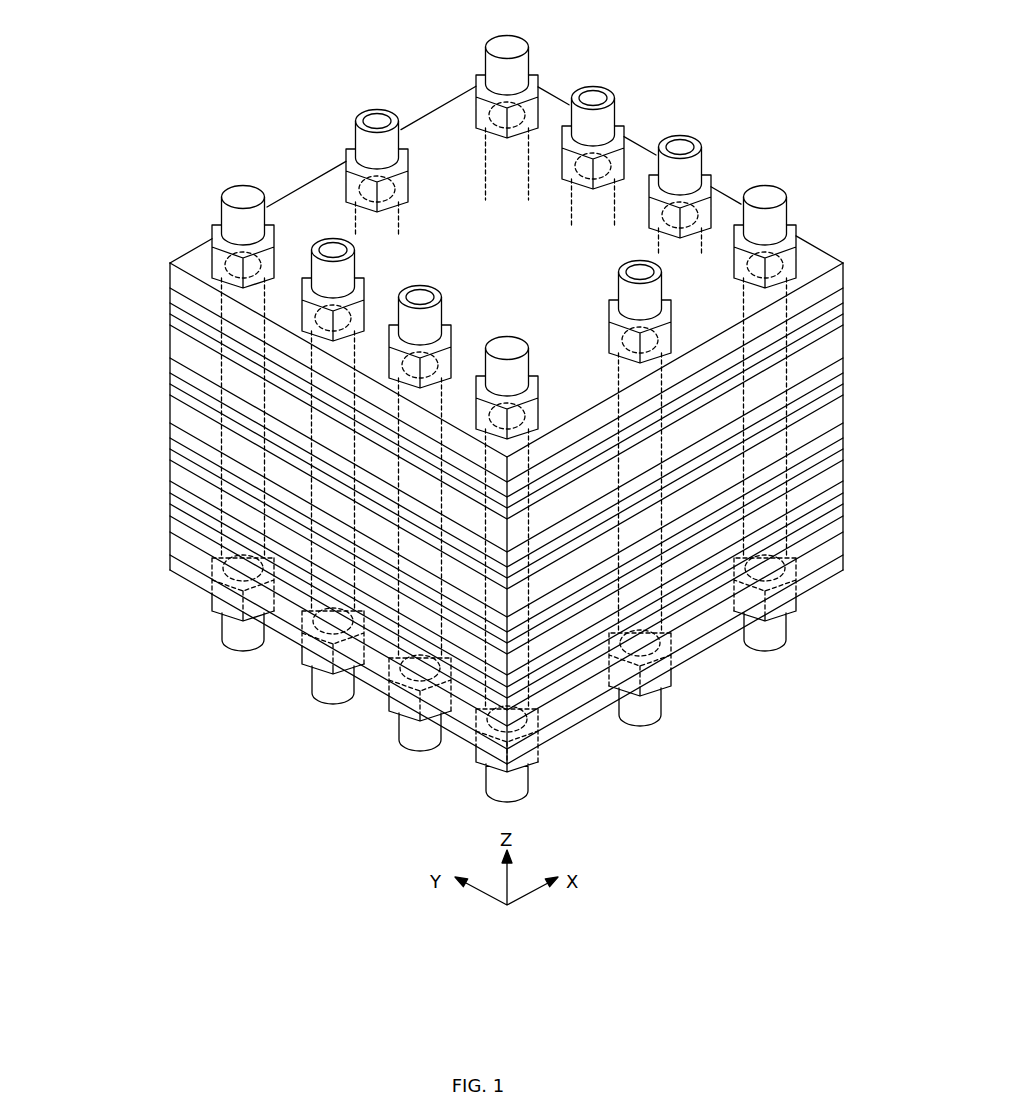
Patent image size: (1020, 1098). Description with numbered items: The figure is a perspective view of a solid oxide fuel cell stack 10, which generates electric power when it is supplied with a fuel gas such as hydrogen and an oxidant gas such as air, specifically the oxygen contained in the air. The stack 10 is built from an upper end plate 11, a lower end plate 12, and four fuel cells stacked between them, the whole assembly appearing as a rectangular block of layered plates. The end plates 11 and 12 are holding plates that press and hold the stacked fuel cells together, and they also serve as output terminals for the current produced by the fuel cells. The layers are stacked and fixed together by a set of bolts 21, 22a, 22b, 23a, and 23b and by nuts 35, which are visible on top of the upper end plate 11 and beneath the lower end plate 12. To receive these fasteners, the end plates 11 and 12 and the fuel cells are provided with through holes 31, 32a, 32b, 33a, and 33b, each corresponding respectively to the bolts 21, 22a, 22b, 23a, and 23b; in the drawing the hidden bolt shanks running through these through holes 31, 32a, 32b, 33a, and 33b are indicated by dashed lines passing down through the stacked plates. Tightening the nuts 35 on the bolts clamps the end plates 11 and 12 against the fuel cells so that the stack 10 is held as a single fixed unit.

The solid oxide fuel cell stack 10 is at (160, 121).
The end plate 11 is at (168, 276).
The end plate 12 is at (168, 569).
The bolt 21 is at (486, 60).
The bolt 22a is at (356, 268).
The bolt 22b is at (616, 112).
The bolt 23a is at (357, 127).
The bolt 23b is at (663, 295).
The through hole 31 is at (484, 185).
The through hole 32a is at (362, 455).
The through hole 32b is at (572, 210).
The through hole 33a is at (356, 230).
The through hole 33b is at (619, 366).
The nut 35 is at (214, 240).